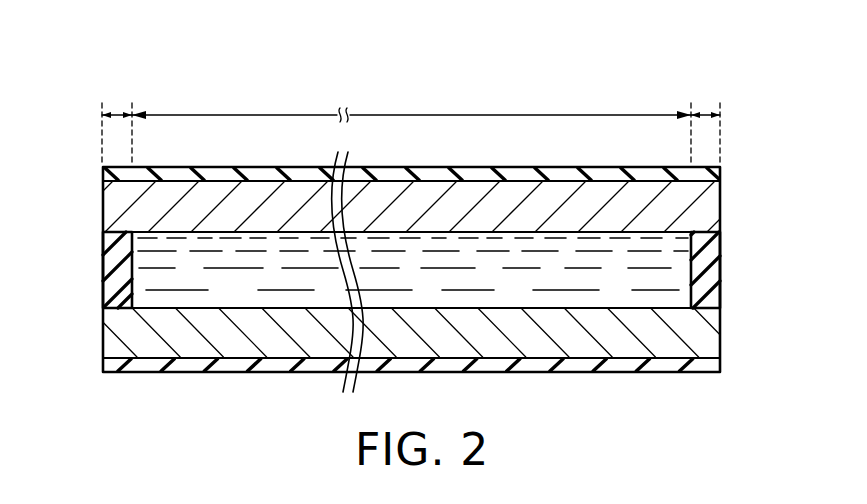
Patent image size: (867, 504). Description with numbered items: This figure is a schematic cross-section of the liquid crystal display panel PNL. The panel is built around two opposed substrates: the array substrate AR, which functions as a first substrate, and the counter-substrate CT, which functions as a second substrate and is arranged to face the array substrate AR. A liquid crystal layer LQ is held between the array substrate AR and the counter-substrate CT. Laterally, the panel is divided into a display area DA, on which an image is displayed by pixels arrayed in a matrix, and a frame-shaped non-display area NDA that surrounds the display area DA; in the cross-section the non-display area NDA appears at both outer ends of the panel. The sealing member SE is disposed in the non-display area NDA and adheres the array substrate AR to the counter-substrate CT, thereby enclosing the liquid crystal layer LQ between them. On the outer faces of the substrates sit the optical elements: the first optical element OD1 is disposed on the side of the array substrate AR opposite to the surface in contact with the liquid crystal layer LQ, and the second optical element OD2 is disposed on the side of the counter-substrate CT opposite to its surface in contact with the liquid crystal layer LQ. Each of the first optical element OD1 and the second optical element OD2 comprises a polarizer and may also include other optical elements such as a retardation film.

The liquid crystal display panel PNL is at (117, 64).
The non-display area NDA is at (413, 122).
The display area DA is at (411, 104).
The counter-substrate CT is at (101, 208).
The sealing member SE is at (115, 275).
The array substrate AR is at (101, 338).
The liquid crystal layer LQ is at (199, 286).
The first optical element OD1 is at (707, 367).
The second optical element OD2 is at (703, 175).